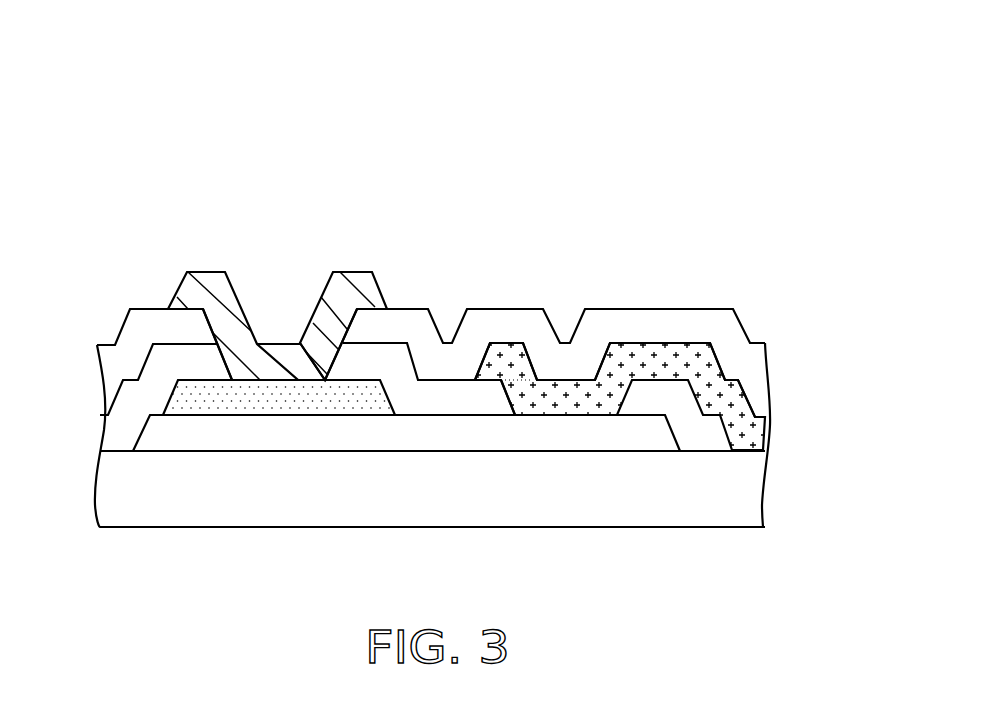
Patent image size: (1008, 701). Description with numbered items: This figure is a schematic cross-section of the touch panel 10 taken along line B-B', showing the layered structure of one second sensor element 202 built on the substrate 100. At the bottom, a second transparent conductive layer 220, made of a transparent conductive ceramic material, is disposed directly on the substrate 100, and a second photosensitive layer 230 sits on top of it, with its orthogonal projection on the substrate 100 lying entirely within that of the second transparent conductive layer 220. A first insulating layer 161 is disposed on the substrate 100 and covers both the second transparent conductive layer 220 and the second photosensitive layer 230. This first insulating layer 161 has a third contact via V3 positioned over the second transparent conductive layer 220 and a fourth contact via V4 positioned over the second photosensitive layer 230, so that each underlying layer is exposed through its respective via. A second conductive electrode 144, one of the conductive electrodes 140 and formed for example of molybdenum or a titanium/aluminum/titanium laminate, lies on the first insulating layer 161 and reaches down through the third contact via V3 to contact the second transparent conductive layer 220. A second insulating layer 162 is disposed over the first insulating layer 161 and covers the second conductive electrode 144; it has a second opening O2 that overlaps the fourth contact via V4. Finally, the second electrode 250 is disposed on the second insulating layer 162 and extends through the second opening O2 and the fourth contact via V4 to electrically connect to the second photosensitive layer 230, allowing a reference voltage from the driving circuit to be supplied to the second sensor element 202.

The touch panel 10 is at (462, 372).
The substrate 100 is at (752, 495).
The conductive electrode 140 is at (681, 396).
The second conductive electrode 144 is at (753, 433).
The first insulating layer 161 is at (153, 375).
The second insulating layer 162 is at (142, 335).
The second sensor element 202 is at (795, 137).
The second transparent conductive layer 220 is at (157, 437).
The second photosensitive layer 230 is at (183, 403).
The second electrode 250 is at (208, 298).
The third contact via V3 is at (509, 398).
The fourth contact via V4 is at (223, 357).
The second opening O2 is at (348, 328).